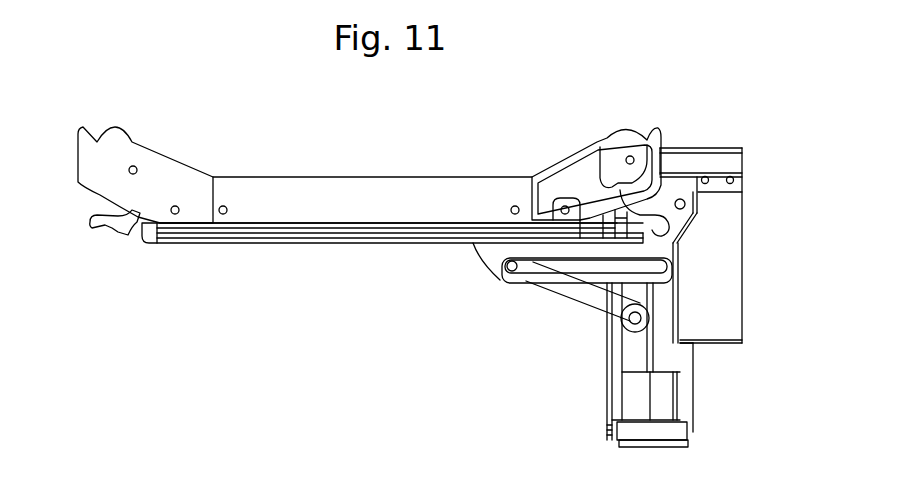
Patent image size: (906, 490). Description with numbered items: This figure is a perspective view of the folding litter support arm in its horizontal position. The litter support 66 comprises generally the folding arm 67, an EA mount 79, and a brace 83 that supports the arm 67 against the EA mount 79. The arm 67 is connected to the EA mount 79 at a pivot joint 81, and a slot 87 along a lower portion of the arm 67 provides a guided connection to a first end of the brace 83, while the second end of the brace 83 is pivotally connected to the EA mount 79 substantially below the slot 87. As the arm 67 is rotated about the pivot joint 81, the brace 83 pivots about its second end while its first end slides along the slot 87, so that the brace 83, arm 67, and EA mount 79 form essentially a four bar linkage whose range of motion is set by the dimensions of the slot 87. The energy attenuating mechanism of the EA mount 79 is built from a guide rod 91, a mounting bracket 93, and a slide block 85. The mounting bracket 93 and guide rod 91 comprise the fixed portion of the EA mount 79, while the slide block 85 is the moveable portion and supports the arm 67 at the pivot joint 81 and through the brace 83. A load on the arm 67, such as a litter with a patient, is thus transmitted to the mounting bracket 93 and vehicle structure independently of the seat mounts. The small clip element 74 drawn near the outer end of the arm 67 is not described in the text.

The litter support 66 is at (294, 108).
The folding arm 67 is at (278, 244).
The clip 74 is at (110, 238).
The EA mount 79 is at (720, 258).
The pivot joint 81 is at (681, 198).
The brace 83 is at (597, 300).
The slide block 85 is at (679, 292).
The slot 87 is at (528, 267).
The guide rod 91 is at (663, 400).
The mounting bracket 93 is at (744, 160).